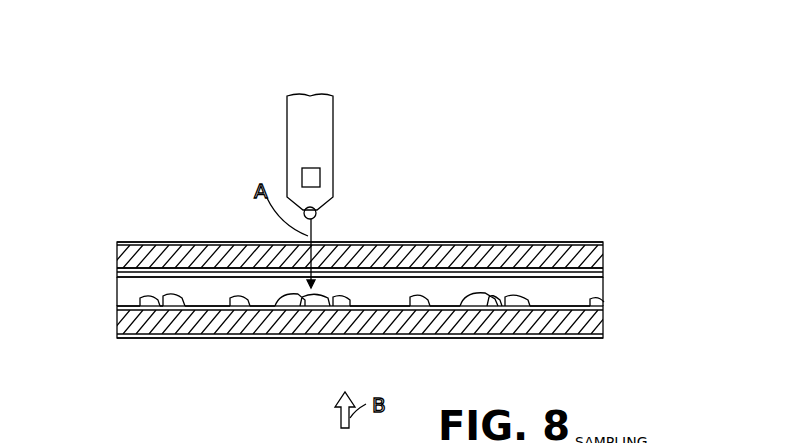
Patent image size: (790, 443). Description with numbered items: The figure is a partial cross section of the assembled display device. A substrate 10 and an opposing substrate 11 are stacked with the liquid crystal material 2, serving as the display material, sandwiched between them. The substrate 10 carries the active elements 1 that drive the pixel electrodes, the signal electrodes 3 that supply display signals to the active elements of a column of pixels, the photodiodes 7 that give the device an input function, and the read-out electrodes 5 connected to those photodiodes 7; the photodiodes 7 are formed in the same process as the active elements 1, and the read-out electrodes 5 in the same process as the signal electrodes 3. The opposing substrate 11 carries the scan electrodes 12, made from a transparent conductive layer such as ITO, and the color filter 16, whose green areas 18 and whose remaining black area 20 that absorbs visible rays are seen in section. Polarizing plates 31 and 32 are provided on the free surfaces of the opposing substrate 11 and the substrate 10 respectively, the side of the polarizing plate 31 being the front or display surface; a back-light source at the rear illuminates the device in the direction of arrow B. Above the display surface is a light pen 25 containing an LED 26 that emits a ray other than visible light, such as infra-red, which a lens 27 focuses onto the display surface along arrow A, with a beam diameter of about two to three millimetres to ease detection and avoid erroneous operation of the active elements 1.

The active element 1 is at (383, 340).
The liquid crystal material 2 is at (598, 292).
The signal electrode 3 is at (155, 340).
The read-out electrode 5 is at (135, 340).
The photodiode 7 is at (263, 328).
The substrate 10 is at (594, 332).
The opposing substrate 11 is at (596, 262).
The scan electrode 12 is at (118, 272).
The color filter 16 is at (600, 276).
The green area 18 is at (172, 263).
The black area 20 is at (250, 272).
The light pen 25 is at (340, 140).
The LED 26 is at (320, 178).
The lens 27 is at (316, 217).
The polarizing plate 31 is at (583, 243).
The polarizing plate 32 is at (583, 343).